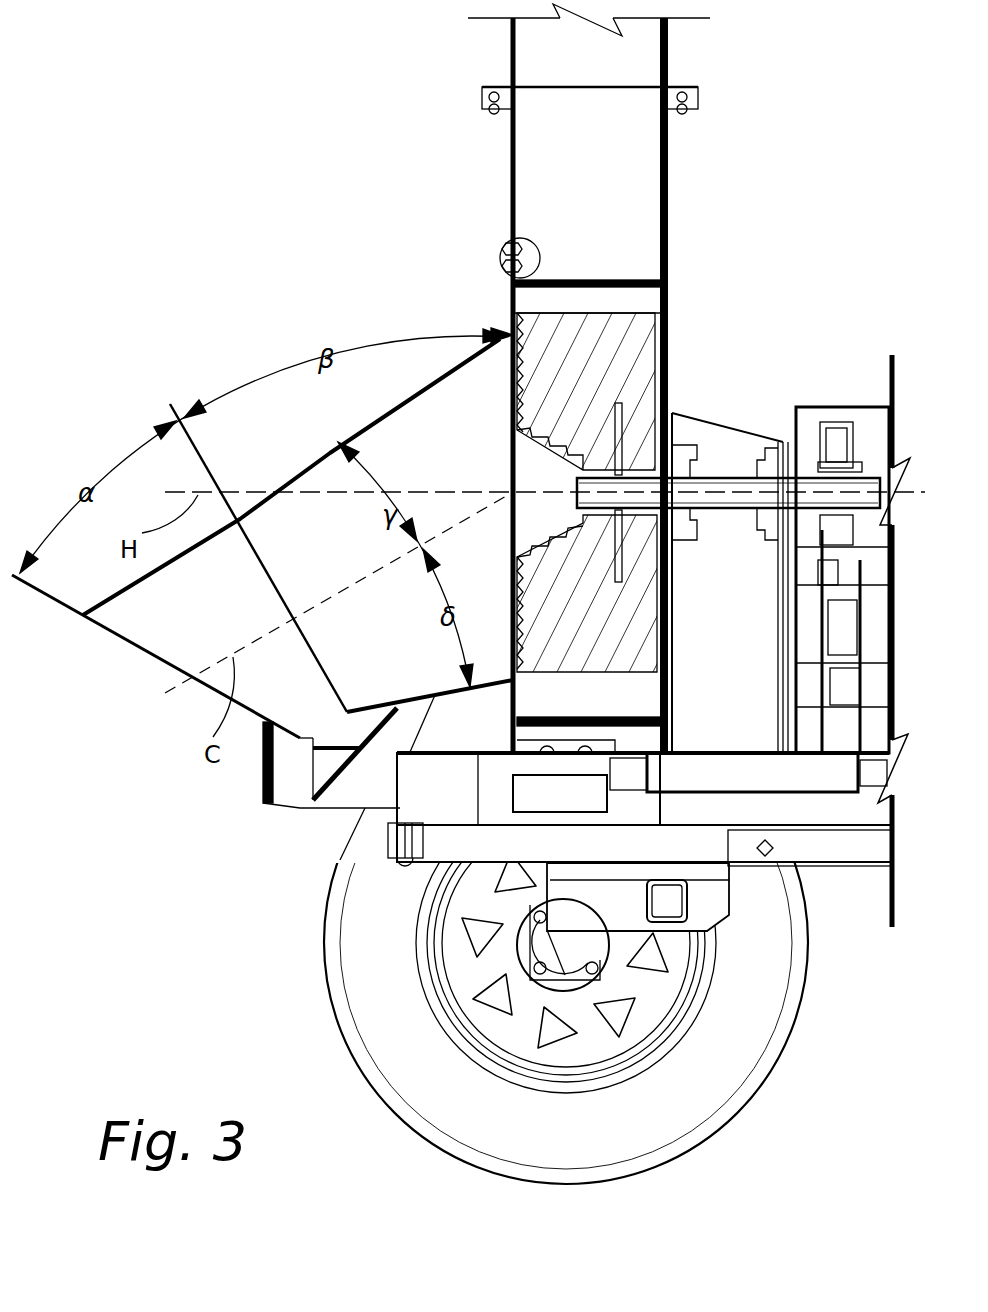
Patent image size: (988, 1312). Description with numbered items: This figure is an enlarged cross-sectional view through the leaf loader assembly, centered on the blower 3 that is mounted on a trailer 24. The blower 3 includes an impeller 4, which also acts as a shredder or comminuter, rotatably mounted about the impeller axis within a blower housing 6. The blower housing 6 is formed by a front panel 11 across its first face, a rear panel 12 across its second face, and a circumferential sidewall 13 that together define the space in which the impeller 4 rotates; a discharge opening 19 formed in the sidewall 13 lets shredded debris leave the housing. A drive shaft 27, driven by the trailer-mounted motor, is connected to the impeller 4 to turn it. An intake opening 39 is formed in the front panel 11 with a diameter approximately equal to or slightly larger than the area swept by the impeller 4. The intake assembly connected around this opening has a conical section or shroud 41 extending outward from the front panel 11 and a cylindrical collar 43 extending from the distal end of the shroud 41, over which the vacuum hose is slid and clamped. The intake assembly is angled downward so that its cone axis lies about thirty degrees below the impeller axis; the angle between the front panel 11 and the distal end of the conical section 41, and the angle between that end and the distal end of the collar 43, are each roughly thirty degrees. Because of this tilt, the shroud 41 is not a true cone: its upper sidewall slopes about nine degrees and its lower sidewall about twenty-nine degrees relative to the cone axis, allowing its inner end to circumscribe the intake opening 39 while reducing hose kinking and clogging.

The discharge opening 19 is at (580, 90).
The front panel 11 is at (512, 224).
The impeller 4 is at (588, 360).
The blower housing 6 is at (634, 262).
The rear panel 12 is at (668, 345).
The blower 3 is at (692, 386).
The circumferential sidewall 13 is at (520, 336).
The intake opening 39 is at (510, 453).
The conical section (shroud) 41 is at (298, 478).
The cylindrical collar 43 is at (165, 660).
The drive shaft 27 is at (732, 513).
The trailer 24 is at (850, 900).